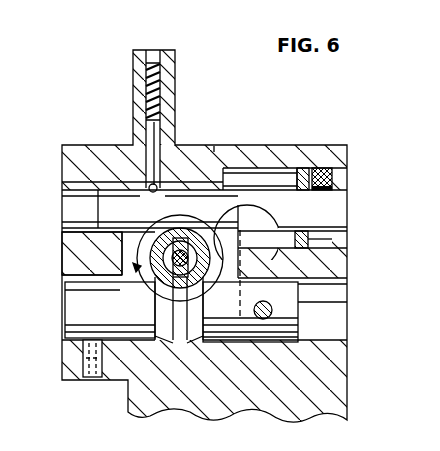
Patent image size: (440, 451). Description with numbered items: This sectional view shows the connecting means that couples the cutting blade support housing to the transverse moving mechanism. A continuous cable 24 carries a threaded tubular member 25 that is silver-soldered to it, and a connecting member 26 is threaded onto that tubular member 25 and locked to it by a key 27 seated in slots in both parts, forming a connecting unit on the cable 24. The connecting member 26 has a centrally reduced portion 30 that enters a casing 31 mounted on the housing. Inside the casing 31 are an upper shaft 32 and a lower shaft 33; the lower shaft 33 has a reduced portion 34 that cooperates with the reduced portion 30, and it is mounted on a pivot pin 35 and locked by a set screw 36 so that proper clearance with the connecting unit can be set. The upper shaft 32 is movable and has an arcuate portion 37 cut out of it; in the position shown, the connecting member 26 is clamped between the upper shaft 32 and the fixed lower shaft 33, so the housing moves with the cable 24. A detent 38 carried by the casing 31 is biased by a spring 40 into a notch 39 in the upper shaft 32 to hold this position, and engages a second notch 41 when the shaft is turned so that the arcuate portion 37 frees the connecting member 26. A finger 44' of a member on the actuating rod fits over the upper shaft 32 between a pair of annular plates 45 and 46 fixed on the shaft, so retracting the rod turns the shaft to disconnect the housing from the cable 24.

The continuous cable 24 is at (155, 298).
The tubular member 25 is at (250, 286).
The connecting member 26 is at (157, 281).
The key 27 is at (205, 250).
The centrally reduced portion 30 is at (140, 240).
The casing 31 is at (255, 141).
The upper shaft 32 is at (125, 208).
The lower shaft 33 is at (100, 303).
The reduced portion 34 is at (130, 388).
The pivot pin 35 is at (268, 302).
The set screw 36 is at (82, 365).
The arcuate portion 37 is at (281, 212).
The detent 38 is at (150, 128).
The notch 39 is at (128, 220).
The spring 40 is at (163, 98).
The second notch 41 is at (216, 148).
The finger 44' is at (359, 183).
The annular plate 45 is at (340, 190).
The annular plate 46 is at (347, 240).